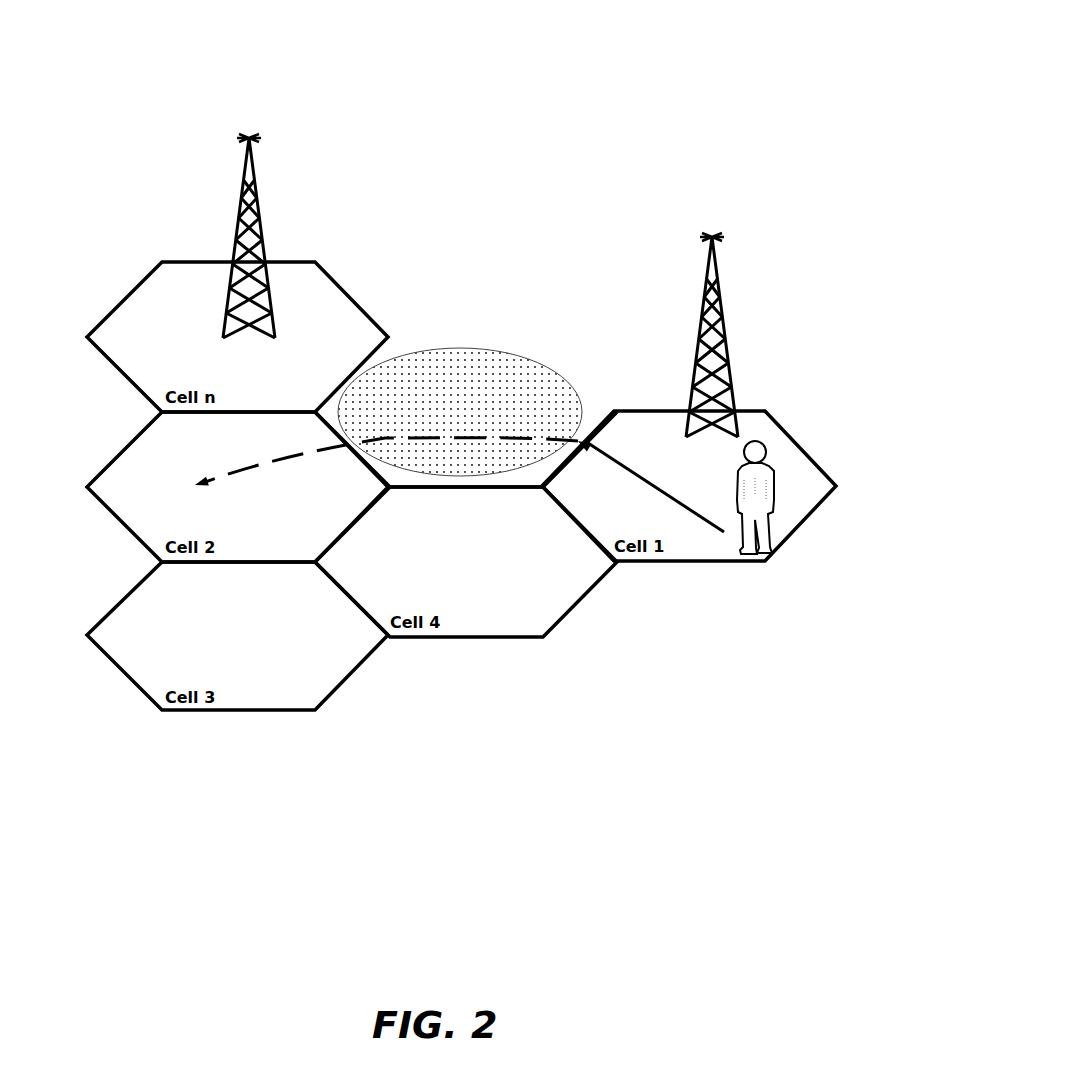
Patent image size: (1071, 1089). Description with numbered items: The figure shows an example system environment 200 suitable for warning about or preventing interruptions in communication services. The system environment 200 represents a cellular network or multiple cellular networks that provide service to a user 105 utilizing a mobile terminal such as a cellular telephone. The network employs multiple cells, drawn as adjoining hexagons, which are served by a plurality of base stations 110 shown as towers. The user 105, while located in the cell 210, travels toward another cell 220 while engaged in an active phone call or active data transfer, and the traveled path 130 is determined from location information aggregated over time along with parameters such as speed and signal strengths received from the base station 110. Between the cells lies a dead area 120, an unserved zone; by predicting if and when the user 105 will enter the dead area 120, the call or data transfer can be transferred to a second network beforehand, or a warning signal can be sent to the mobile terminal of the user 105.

The system environment 200 is at (750, 54).
The base station 110 is at (268, 152).
The dead area 120 is at (557, 392).
The traveled path 130 is at (626, 468).
The user 105 is at (768, 550).
The cell 210 is at (806, 438).
The cell 220 is at (110, 452).